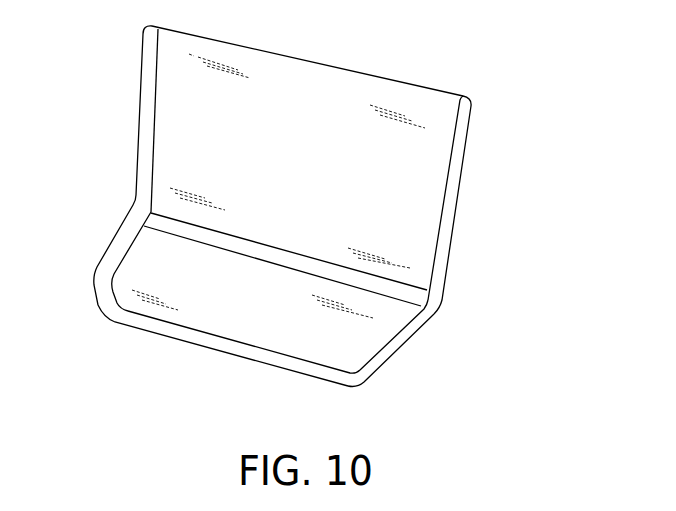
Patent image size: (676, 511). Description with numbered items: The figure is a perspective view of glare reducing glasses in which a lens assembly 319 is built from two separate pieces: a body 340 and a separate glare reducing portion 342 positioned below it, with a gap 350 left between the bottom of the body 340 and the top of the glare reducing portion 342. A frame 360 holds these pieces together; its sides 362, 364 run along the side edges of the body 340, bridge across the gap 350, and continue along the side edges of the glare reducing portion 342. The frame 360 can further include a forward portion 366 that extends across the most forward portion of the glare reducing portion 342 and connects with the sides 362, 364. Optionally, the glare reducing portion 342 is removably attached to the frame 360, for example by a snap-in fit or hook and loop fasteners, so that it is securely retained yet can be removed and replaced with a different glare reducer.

The lens assembly 319 is at (554, 127).
The body 340 is at (363, 92).
The glare reducing portion 342 is at (122, 282).
The gap 350 is at (160, 222).
The frame 360 is at (452, 232).
The side 362 is at (443, 287).
The side 364 is at (139, 107).
The forward portion 366 is at (235, 352).